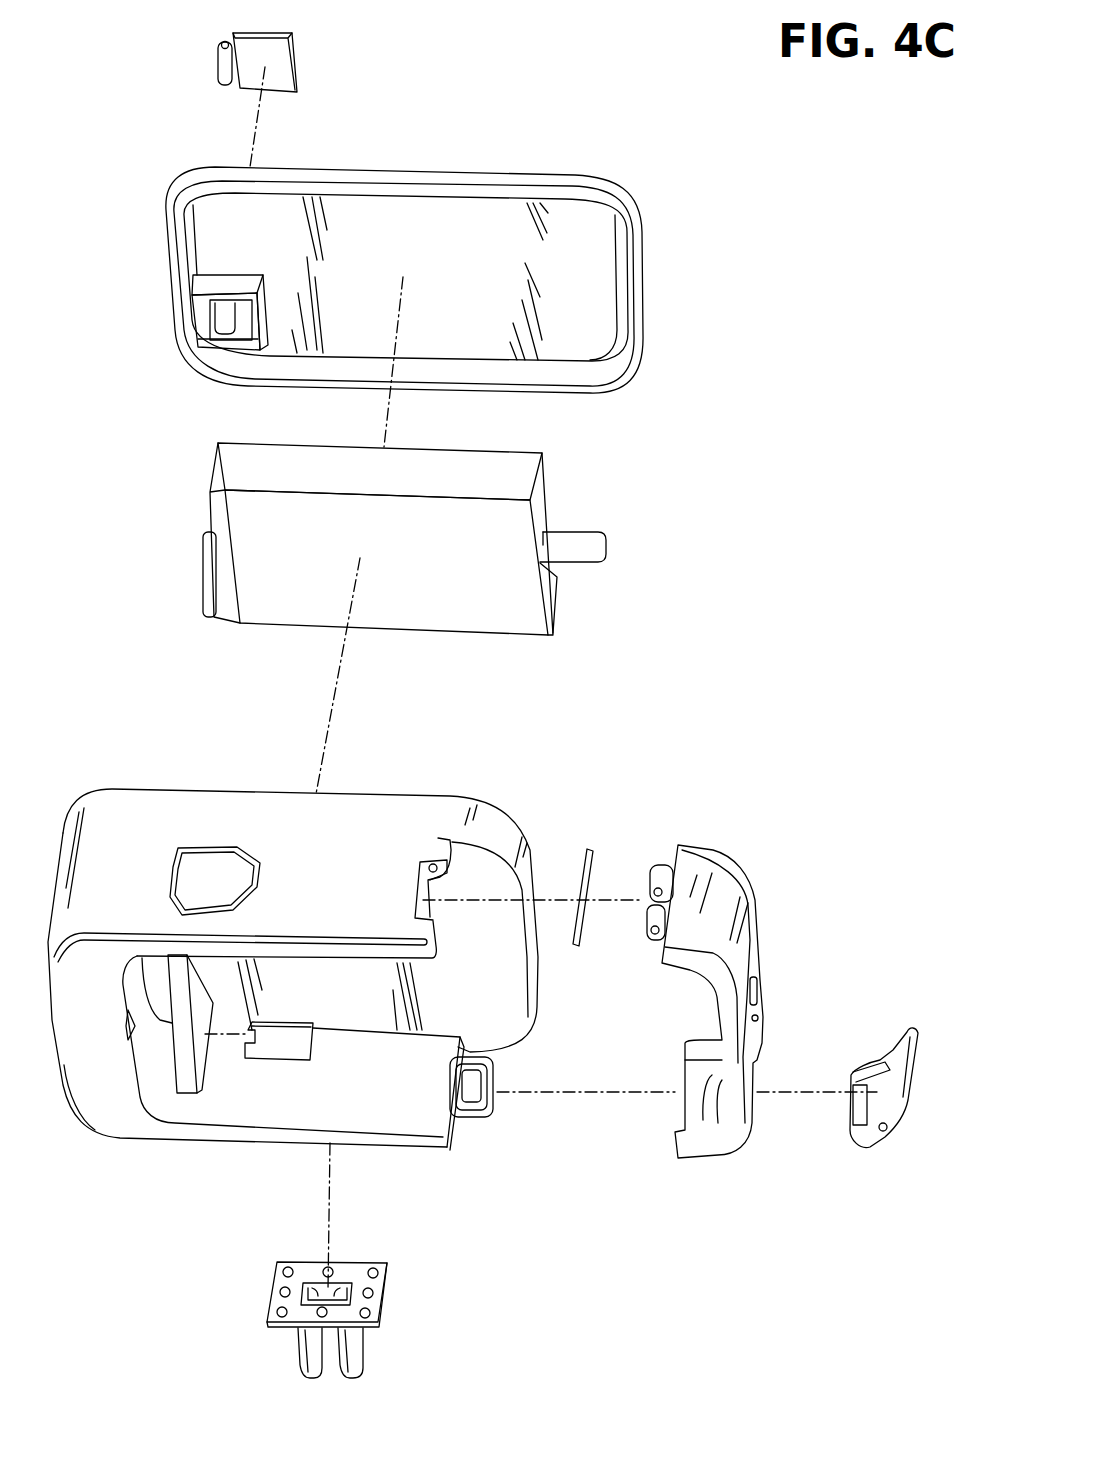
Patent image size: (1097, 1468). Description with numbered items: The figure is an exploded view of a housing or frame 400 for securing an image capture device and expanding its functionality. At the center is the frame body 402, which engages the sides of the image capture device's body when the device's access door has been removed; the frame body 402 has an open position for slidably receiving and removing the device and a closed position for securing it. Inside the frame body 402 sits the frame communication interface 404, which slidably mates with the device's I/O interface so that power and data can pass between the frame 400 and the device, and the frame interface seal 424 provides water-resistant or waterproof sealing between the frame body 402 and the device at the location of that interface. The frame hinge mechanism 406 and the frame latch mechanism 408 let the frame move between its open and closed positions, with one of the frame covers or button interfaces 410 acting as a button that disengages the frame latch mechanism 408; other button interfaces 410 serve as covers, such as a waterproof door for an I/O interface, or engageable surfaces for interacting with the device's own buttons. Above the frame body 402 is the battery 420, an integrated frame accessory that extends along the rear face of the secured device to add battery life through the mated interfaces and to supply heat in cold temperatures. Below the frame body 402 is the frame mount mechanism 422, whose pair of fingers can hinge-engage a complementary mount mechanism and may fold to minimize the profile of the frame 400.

The housing or frame 400 is at (742, 183).
The frame body 402 is at (107, 815).
The frame communication interface 404 is at (266, 1057).
The frame hinge mechanism 406 is at (662, 863).
The frame latch mechanism 408 is at (483, 1120).
The frame covers or button interfaces 410 is at (278, 57).
The battery 420 is at (522, 470).
The frame mount mechanism 422 is at (357, 1348).
The frame interface seal 424 is at (187, 1062).